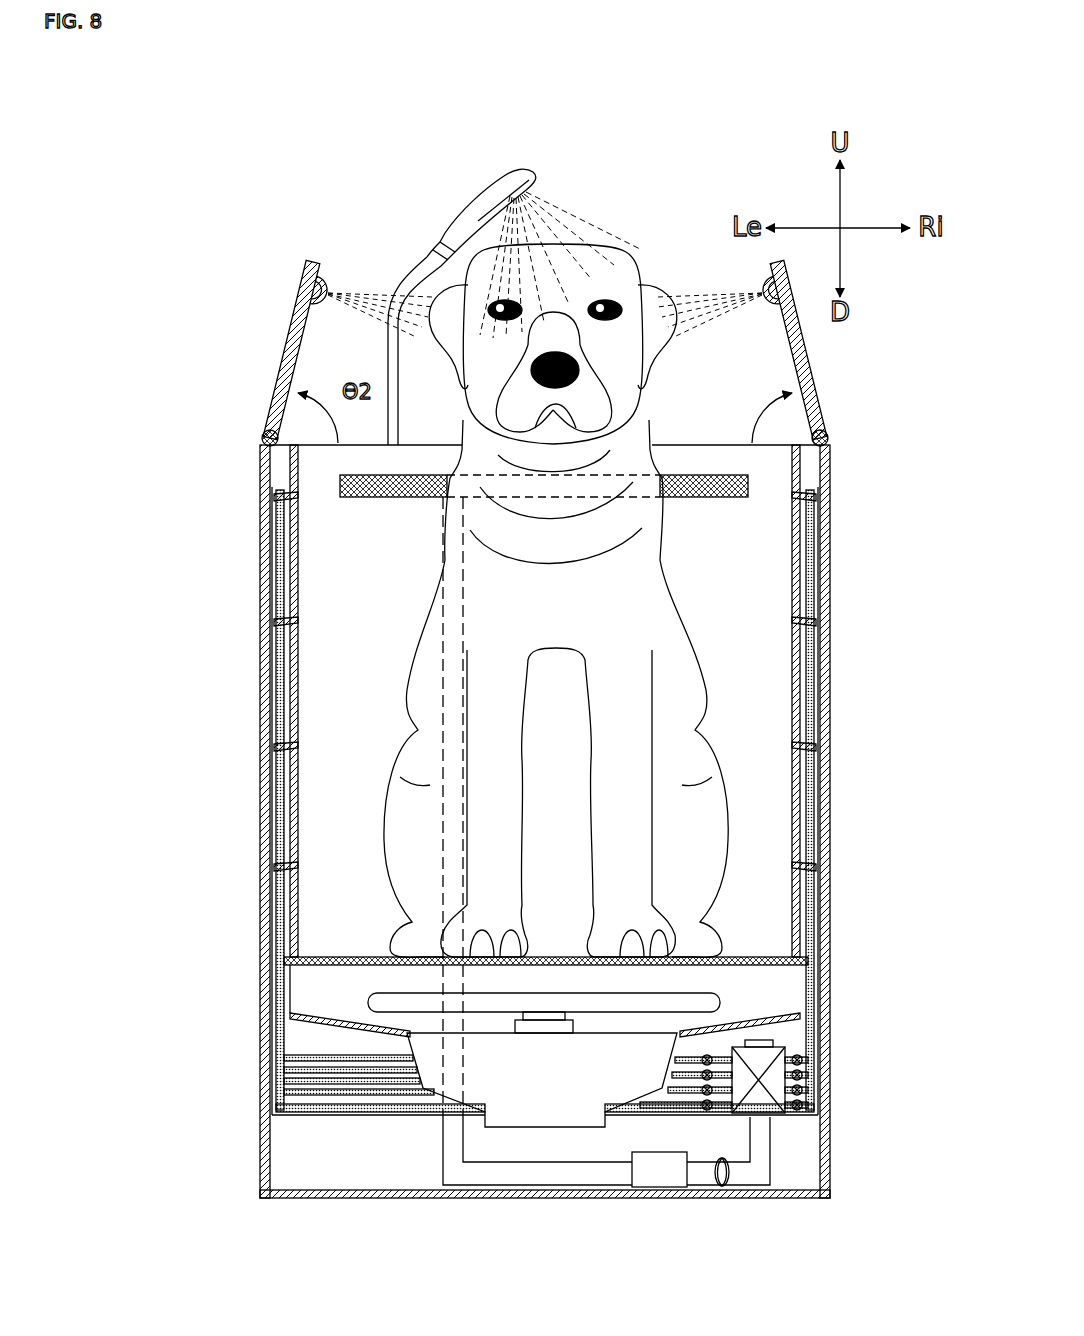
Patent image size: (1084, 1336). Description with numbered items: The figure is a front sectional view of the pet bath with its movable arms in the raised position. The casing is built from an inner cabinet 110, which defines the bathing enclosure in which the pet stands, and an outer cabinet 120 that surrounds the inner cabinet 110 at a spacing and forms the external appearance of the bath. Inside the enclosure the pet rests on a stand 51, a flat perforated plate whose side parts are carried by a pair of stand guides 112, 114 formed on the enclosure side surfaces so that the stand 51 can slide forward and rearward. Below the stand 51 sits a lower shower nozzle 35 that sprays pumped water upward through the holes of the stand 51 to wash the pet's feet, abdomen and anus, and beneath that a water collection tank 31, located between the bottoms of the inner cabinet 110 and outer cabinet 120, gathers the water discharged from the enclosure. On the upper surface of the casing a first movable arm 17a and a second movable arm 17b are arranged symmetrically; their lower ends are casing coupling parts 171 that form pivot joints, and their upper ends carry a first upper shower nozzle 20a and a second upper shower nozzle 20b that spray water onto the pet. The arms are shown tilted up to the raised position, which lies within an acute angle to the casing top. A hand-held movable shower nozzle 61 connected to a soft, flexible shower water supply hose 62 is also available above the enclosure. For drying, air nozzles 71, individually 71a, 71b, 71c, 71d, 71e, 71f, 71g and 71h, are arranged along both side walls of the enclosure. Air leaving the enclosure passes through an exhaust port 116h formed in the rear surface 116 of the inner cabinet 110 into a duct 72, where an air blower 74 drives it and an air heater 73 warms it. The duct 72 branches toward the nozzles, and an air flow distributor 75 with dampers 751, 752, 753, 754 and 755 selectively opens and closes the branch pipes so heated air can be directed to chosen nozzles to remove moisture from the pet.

The first movable arm 17a is at (282, 345).
The second movable arm 17b is at (806, 345).
The casing coupling part 171 is at (262, 433).
The first upper shower nozzle 20a is at (310, 262).
The second upper shower nozzle 20b is at (756, 283).
The water collection tank 31 is at (508, 1118).
The lower shower nozzle 35 is at (368, 1003).
The stand 51 is at (284, 963).
The movable shower nozzle 61 is at (507, 184).
The shower water supply hose 62 is at (394, 272).
The air nozzles 71 is at (519, 678).
The air nozzle 71a is at (280, 497).
The air nozzle 71b is at (280, 622).
The air nozzle 71c is at (280, 747).
The air nozzle 71d is at (280, 867).
The air nozzle 71e is at (810, 495).
The air nozzle 71f is at (810, 622).
The air nozzle 71g is at (810, 747).
The air nozzle 71h is at (810, 867).
The duct 72 is at (450, 1167).
The air heater 73 is at (455, 660).
The air blower 74 is at (729, 1178).
The air flow distributor 75 is at (762, 1045).
The inner cabinet 110 is at (282, 812).
The stand guide 112 is at (290, 958).
The stand guide 114 is at (808, 961).
The rear surface 116 is at (632, 432).
The exhaust port 116h is at (750, 478).
The outer cabinet 120 is at (830, 556).
The damper 751 is at (546, 1079).
The damper 752 is at (546, 1072).
The damper 753 is at (546, 1085).
The damper 754 is at (664, 1104).
The damper 755 is at (804, 1106).